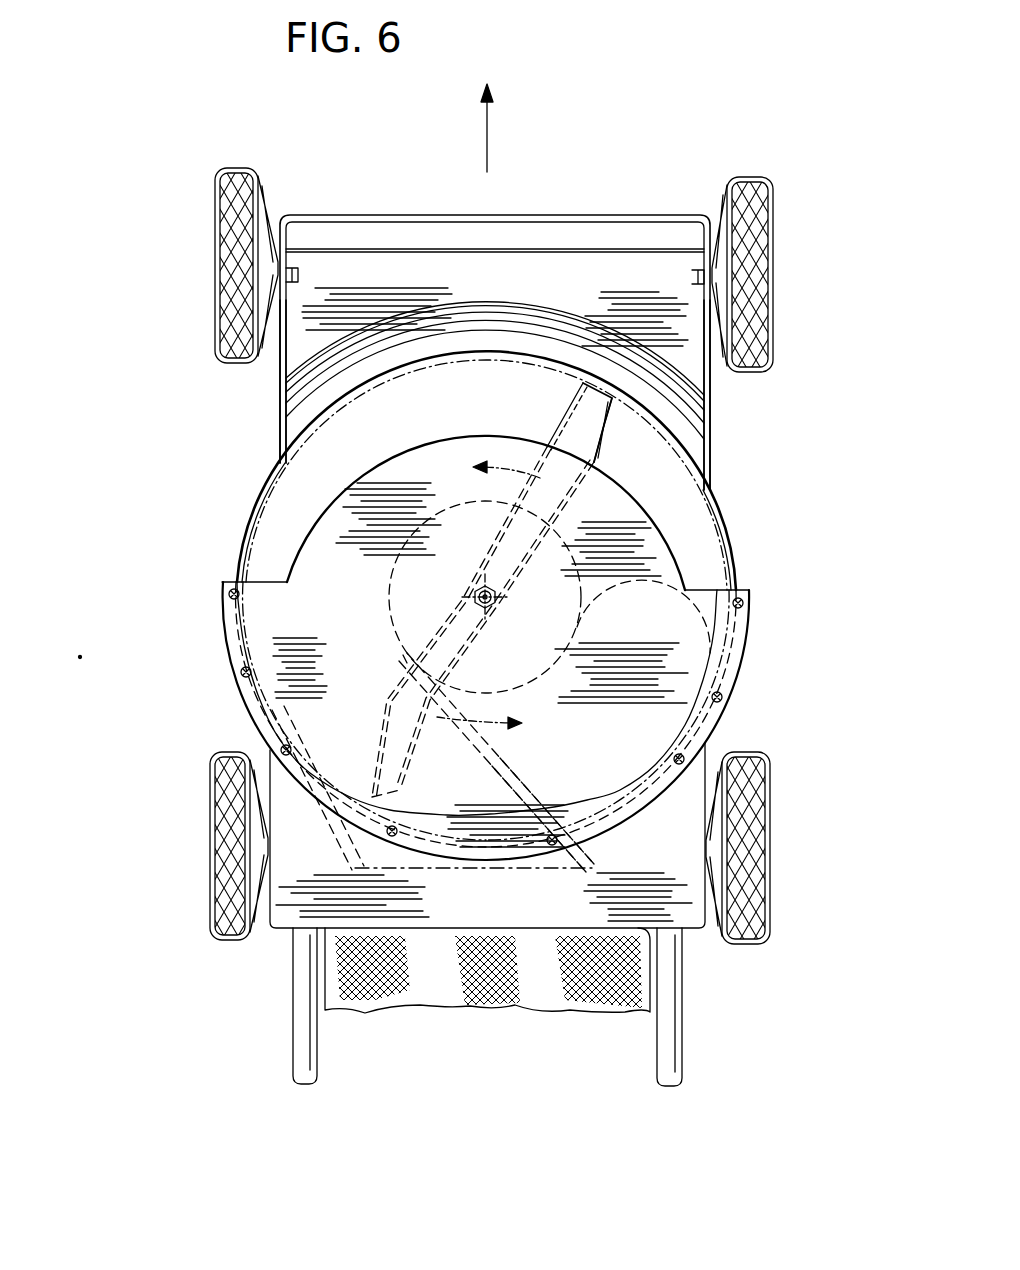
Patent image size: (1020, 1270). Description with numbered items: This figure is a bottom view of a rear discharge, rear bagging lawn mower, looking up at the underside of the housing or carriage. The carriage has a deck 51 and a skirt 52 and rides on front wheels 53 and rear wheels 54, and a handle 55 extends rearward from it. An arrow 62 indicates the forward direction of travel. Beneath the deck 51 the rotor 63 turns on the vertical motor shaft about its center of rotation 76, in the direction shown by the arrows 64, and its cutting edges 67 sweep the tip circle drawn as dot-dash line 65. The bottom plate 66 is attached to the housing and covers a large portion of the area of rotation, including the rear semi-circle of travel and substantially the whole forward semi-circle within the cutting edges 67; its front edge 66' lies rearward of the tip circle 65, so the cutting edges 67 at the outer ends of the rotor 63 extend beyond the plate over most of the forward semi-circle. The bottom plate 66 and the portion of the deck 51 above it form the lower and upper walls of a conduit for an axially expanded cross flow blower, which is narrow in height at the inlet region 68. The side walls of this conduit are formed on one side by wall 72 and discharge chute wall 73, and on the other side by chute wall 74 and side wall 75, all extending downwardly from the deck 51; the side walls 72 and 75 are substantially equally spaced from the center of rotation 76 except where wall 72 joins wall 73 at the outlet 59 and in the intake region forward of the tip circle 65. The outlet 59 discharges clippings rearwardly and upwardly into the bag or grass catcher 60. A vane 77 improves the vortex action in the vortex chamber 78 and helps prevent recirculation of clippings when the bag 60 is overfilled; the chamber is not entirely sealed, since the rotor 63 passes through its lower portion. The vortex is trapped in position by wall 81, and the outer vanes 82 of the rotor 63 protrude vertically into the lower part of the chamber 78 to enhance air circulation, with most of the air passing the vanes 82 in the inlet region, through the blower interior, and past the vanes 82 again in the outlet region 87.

The deck 51 is at (502, 294).
The skirt 52 is at (281, 425).
The front wheels 53 is at (232, 278).
The rear wheels 54 is at (218, 850).
The handle 55 is at (303, 1013).
The outlet 59 is at (497, 872).
The bag or grass catcher 60 is at (505, 1012).
The arrow 62 is at (489, 132).
The rotor 63 is at (450, 618).
The arrows 64 is at (512, 472).
The tip circle 65 is at (356, 397).
The bottom plate 66 is at (477, 649).
The front edge of the bottom plate 66' is at (486, 497).
The cutting edges 67 is at (564, 415).
The inlet region 68 is at (503, 414).
The wall 72 is at (238, 658).
The discharge chute wall 73 is at (343, 844).
The chute wall 74 is at (588, 860).
The side wall 75 is at (728, 682).
The center of rotation 76 is at (488, 586).
The vane 77 is at (530, 793).
The vortex chamber 78 is at (628, 708).
The wall 81 is at (622, 604).
The outer vanes 82 is at (608, 432).
The outlet region 87 is at (403, 864).